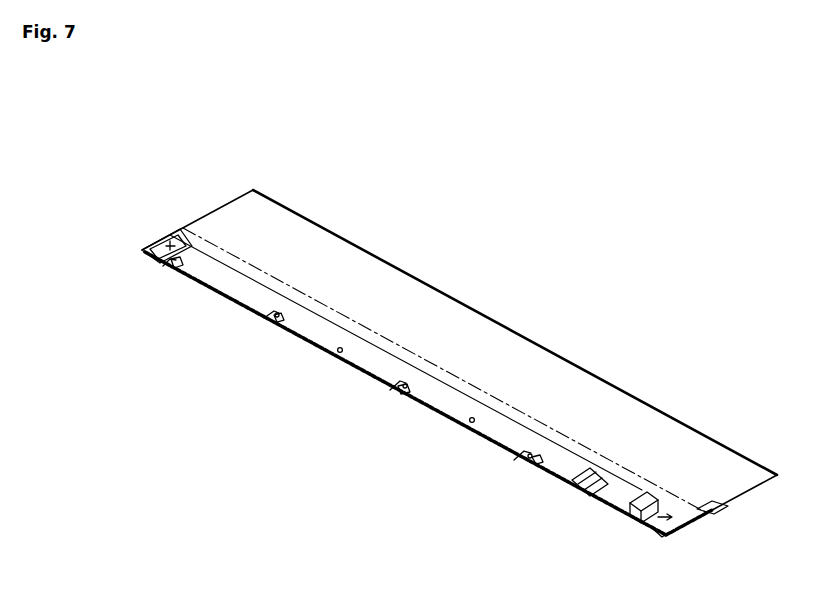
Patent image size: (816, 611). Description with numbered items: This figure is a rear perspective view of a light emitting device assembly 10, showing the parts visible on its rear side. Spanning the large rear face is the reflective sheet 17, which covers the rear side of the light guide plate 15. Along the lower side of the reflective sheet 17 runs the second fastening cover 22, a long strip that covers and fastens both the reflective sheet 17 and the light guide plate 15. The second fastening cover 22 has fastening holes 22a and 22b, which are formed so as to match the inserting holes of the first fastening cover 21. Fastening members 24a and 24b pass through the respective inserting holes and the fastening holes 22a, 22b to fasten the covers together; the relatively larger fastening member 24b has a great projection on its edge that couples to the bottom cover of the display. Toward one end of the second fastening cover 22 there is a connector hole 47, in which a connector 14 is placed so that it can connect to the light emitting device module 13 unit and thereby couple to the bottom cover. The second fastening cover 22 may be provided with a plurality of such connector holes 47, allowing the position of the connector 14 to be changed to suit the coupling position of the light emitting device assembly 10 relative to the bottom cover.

The light emitting device assembly 10 is at (459, 362).
The light emitting device module 13 is at (717, 508).
The connector 14 is at (647, 498).
The light guide plate 15 is at (681, 528).
The reflective sheet 17 is at (515, 357).
The first fastening cover 21 is at (657, 535).
The second fastening cover 22 is at (612, 488).
The fastening hole 22a is at (278, 322).
The fastening hole 22b is at (175, 268).
The fastening member 24a is at (516, 456).
The fastening member 24b is at (166, 263).
The connector hole 47 is at (167, 245).